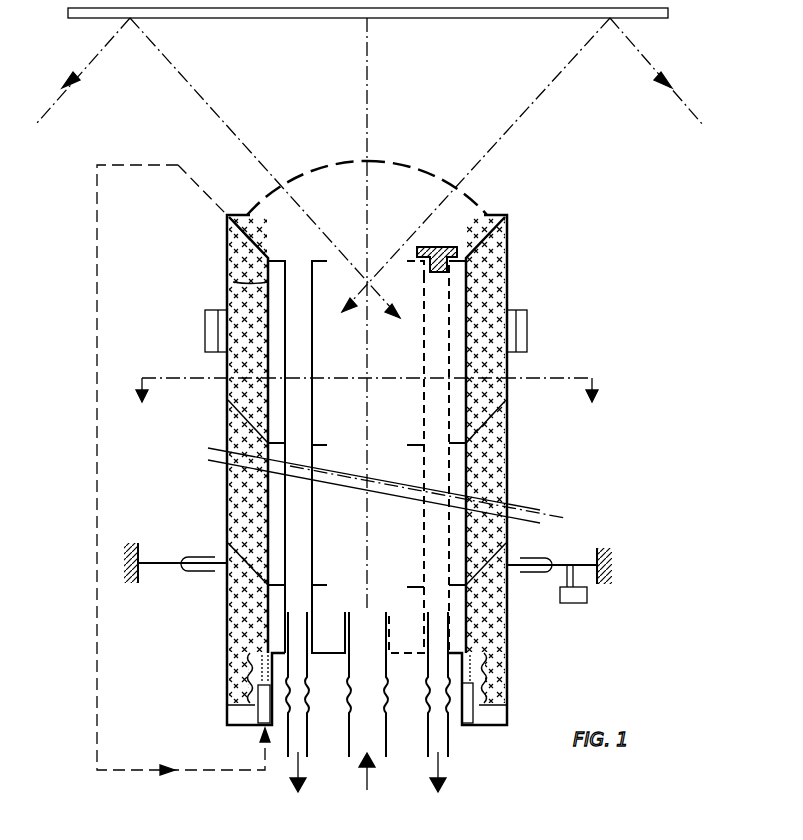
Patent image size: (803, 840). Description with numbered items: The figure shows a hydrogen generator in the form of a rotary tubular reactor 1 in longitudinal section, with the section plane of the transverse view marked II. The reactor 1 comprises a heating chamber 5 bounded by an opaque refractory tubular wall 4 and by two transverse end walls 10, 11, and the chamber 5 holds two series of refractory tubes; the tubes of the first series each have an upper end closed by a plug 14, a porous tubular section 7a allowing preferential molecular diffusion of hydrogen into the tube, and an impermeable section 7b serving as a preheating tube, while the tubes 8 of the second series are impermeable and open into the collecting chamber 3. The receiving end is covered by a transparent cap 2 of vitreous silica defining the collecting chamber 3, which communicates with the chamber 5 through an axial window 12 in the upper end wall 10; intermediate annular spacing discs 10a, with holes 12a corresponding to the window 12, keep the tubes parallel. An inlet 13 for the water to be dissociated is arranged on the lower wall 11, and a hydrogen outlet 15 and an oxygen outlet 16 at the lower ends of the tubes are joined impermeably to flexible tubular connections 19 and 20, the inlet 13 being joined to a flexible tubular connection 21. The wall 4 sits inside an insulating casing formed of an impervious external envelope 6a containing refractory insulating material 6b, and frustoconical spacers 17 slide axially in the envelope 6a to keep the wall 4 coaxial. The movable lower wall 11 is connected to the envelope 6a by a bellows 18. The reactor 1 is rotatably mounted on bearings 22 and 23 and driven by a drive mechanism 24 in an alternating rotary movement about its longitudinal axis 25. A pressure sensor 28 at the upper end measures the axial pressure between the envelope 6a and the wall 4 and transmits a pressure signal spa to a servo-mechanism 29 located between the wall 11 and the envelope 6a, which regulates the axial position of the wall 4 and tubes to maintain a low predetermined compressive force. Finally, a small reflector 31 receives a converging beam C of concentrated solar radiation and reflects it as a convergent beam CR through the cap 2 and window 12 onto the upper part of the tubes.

The rotary tubular reactor 1 is at (548, 330).
The transparent cap 2 is at (338, 162).
The collecting chamber 3 is at (418, 172).
The refractory tubular wall 4 is at (268, 282).
The heating chamber 5 is at (352, 340).
The external envelope 6a is at (507, 268).
The refractory insulating material 6b is at (490, 290).
The porous tubular section 7a is at (422, 365).
The impermeable section 7b is at (422, 535).
The refractory tubes of the second series 8 is at (312, 347).
The transverse end wall 10 is at (320, 260).
The annular spacing discs 10a is at (422, 444).
The transverse end wall 11 is at (320, 646).
The axial window 12 is at (381, 250).
The holes of the spacing discs 12a is at (354, 440).
The water inlet 13 is at (363, 606).
The plug 14 is at (438, 247).
The hydrogen outlet 15 is at (432, 650).
The oxygen outlet 16 is at (304, 665).
The frustoconical spacers 17 is at (497, 238).
The bellows 18 is at (498, 680).
The flexible tubular connection 19 is at (428, 700).
The flexible tubular connection 20 is at (308, 705).
The flexible tubular connection 21 is at (386, 710).
The bearing 22 is at (207, 329).
The bearing 23 is at (191, 556).
The drive mechanism 24 is at (572, 603).
The longitudinal axis 25 is at (370, 100).
The pressure sensor 28 is at (228, 240).
The servo-mechanism 29 is at (257, 717).
The reflector 31 is at (291, 18).
The converging beam C is at (645, 55).
The reflected convergent beam CR is at (535, 100).
The section line II- II is at (363, 407).
The pressure signal spa is at (183, 470).